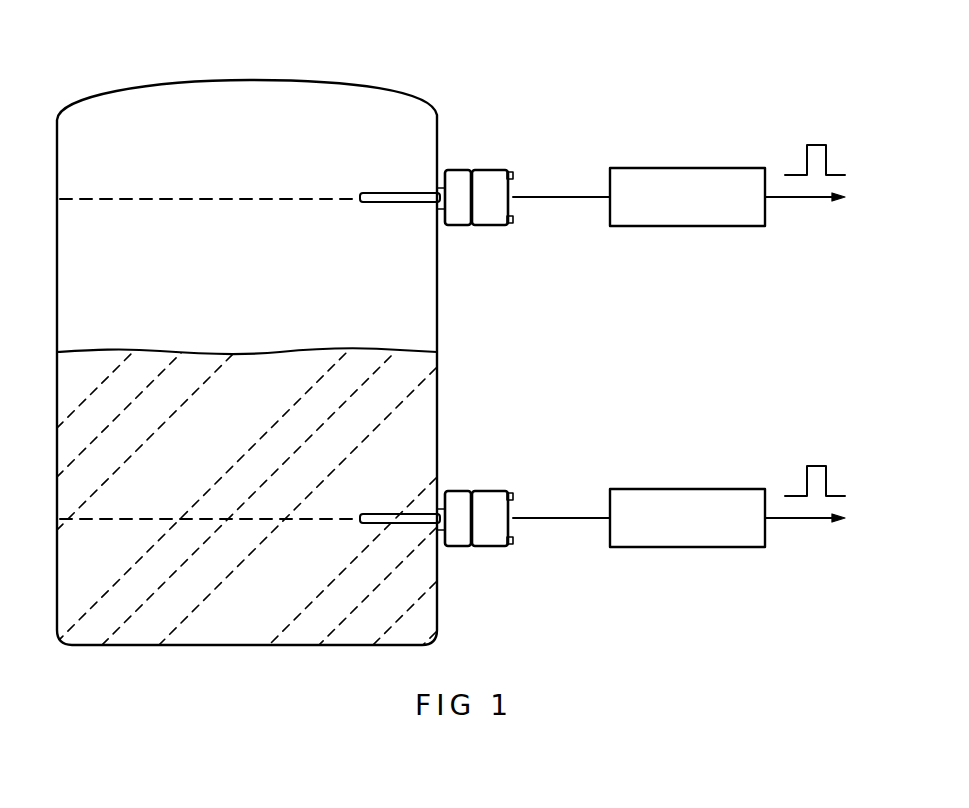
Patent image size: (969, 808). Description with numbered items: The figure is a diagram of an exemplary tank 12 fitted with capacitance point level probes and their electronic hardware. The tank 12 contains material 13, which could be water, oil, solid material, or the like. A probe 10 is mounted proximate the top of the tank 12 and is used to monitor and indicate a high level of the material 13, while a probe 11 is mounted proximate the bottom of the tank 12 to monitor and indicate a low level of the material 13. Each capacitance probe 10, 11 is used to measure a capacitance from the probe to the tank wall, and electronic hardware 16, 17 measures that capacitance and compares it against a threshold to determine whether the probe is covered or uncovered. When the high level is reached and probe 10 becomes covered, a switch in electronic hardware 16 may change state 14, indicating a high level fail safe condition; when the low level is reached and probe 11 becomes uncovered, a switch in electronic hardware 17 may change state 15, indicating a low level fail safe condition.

The probe 10 is at (492, 168).
The probe 11 is at (492, 490).
The tank 12 is at (302, 80).
The material 13 is at (387, 402).
The state change 14 is at (820, 144).
The state change 15 is at (820, 465).
The electronic hardware 16 is at (697, 167).
The electronic hardware 17 is at (697, 488).